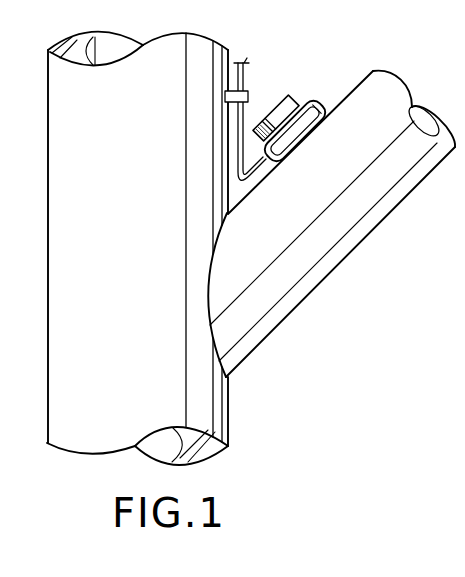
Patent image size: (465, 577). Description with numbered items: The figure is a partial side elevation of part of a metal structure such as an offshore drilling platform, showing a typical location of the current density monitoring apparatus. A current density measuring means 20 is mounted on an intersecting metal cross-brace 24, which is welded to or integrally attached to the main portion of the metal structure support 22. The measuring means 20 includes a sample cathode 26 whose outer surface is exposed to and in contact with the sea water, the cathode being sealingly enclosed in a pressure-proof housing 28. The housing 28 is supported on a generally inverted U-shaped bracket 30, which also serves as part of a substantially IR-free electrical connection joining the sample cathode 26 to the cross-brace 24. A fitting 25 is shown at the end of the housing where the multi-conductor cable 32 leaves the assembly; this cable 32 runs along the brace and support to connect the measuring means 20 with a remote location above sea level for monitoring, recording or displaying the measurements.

The current density measuring means 20 is at (259, 96).
The metal structure support 22 is at (126, 207).
The cross-brace 24 is at (292, 231).
The fitting 25 is at (261, 121).
The sample cathode 26 is at (277, 96).
The pressure-proof housing 28 is at (299, 96).
The inverted U-shaped bracket 30 is at (318, 106).
The cable 32 is at (237, 79).